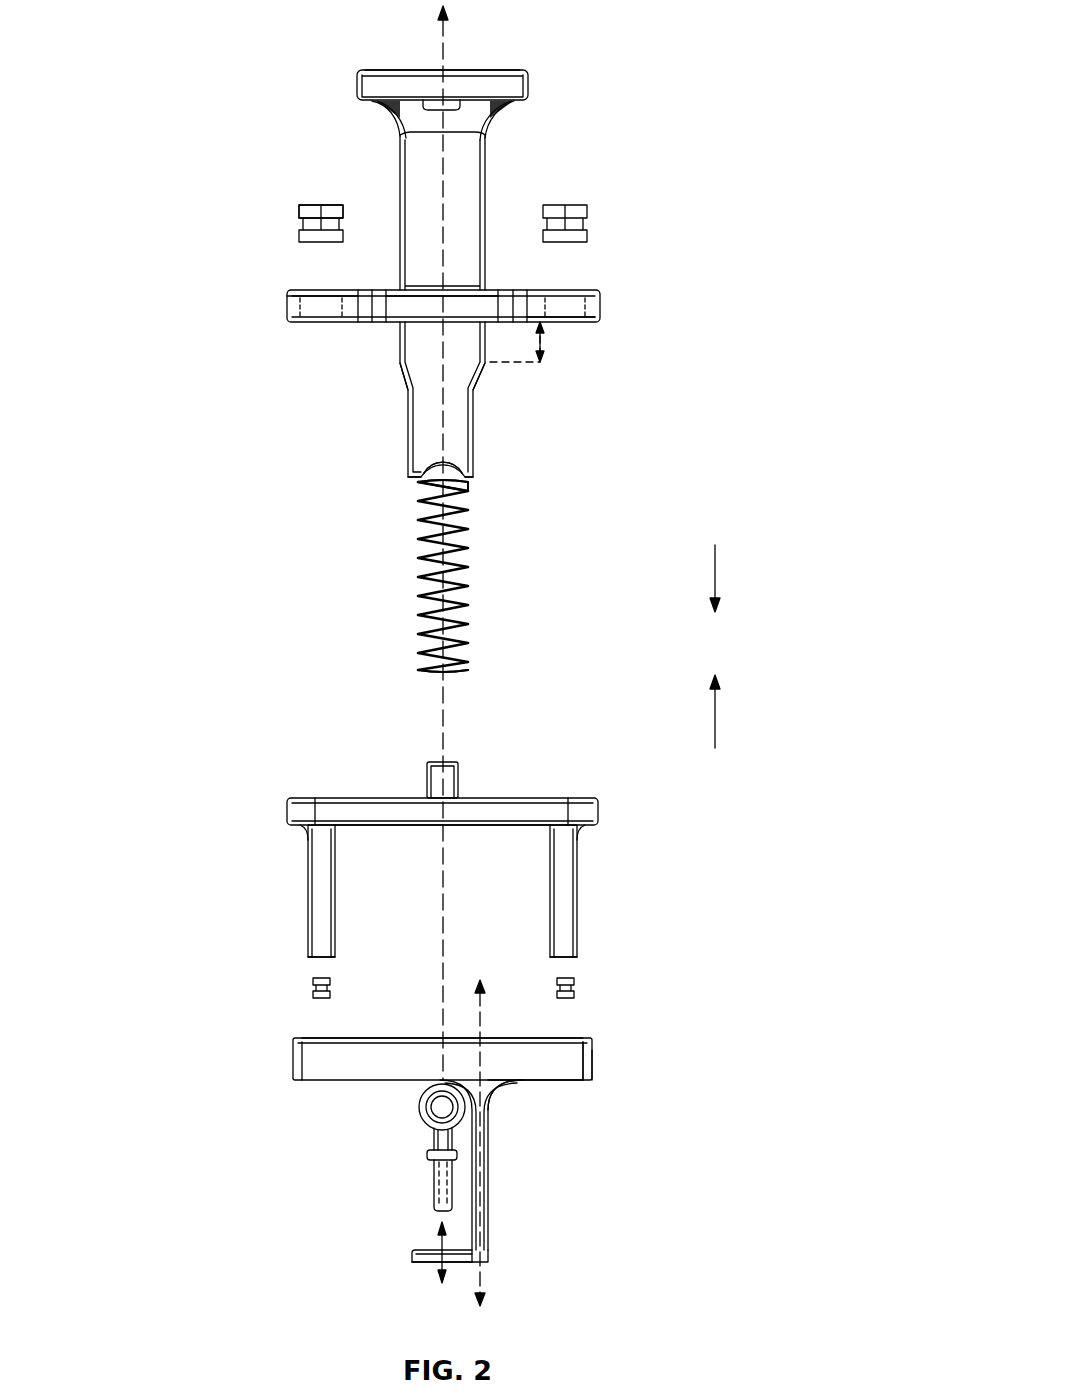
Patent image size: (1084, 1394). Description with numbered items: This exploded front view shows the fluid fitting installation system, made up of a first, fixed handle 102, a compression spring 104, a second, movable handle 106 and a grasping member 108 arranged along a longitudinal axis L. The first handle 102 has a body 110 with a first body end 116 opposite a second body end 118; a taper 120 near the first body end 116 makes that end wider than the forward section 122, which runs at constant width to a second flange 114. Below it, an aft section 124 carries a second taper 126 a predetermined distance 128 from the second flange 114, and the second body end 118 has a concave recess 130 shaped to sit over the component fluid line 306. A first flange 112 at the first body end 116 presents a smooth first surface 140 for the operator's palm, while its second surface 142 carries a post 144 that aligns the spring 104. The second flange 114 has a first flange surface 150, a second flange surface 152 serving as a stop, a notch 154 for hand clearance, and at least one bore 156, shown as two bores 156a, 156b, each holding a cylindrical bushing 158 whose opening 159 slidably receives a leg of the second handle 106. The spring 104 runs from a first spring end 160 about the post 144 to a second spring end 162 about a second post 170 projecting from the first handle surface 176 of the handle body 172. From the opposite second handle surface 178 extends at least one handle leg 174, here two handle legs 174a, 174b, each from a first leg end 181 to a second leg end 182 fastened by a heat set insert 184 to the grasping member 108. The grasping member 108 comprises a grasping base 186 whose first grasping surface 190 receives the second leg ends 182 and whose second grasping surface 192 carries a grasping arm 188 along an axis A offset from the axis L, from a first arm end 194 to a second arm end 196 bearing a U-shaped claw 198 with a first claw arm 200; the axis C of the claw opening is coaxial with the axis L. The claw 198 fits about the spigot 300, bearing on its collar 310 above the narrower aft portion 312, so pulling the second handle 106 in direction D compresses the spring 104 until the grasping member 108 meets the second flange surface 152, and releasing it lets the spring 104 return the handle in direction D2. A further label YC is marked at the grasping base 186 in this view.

The first handle 102 is at (690, 256).
The spring 104 is at (490, 578).
The second handle 106 is at (662, 846).
The grasping member 108 is at (690, 1140).
The body 110 is at (576, 158).
The first flange 112 is at (528, 68).
The second flange 114 is at (603, 283).
The first body end 116 is at (498, 118).
The second body end 118 is at (450, 472).
The taper 120 is at (378, 104).
The forward section 122 is at (470, 200).
The aft section 124 is at (470, 405).
The second taper 126 is at (405, 378).
The distance 128 is at (545, 343).
The recess 130 is at (455, 486).
The first surface 140 is at (448, 68).
The second surface 142 is at (398, 122).
The post 144 is at (440, 112).
The first flange surface 150 is at (300, 290).
The second flange surface 152 is at (592, 322).
The notch 154 is at (487, 298).
The bore 156 is at (672, 202).
The bore 156a is at (317, 231).
The bore 156b is at (560, 290).
The bushing 158 is at (300, 231).
The opening 159 is at (288, 197).
The first spring end 160 is at (420, 488).
The second spring end 162 is at (462, 672).
The second post 170 is at (460, 778).
The handle body 172 is at (600, 768).
The handle leg 174 is at (298, 910).
The handle leg 174a is at (348, 898).
The handle leg 174b is at (590, 900).
The first handle surface 176 is at (550, 798).
The second handle surface 178 is at (487, 827).
The first leg end 181 is at (306, 832).
The second leg end 182 is at (316, 958).
The heat set insert 184 is at (332, 988).
The grasping base 186 is at (605, 1060).
The grasping arm 188 is at (512, 1178).
The first grasping surface 190 is at (535, 1038).
The second grasping surface 192 is at (582, 1082).
The first arm end 194 is at (490, 1090).
The second arm end 196 is at (490, 1260).
The claw 198 is at (407, 1266).
The first claw arm 200 is at (466, 1264).
The spigot 300 is at (394, 1162).
The component fluid line 306 is at (466, 478).
The collar 310 is at (425, 1112).
The aft portion 312 is at (430, 1166).
The axis A is at (485, 992).
The axis C is at (435, 1270).
The direction D is at (715, 712).
The direction D2 is at (715, 580).
The longitudinal axis L is at (442, 1020).
The yoke center YC is at (535, 1099).